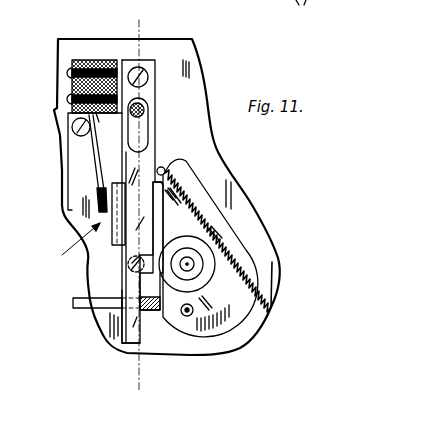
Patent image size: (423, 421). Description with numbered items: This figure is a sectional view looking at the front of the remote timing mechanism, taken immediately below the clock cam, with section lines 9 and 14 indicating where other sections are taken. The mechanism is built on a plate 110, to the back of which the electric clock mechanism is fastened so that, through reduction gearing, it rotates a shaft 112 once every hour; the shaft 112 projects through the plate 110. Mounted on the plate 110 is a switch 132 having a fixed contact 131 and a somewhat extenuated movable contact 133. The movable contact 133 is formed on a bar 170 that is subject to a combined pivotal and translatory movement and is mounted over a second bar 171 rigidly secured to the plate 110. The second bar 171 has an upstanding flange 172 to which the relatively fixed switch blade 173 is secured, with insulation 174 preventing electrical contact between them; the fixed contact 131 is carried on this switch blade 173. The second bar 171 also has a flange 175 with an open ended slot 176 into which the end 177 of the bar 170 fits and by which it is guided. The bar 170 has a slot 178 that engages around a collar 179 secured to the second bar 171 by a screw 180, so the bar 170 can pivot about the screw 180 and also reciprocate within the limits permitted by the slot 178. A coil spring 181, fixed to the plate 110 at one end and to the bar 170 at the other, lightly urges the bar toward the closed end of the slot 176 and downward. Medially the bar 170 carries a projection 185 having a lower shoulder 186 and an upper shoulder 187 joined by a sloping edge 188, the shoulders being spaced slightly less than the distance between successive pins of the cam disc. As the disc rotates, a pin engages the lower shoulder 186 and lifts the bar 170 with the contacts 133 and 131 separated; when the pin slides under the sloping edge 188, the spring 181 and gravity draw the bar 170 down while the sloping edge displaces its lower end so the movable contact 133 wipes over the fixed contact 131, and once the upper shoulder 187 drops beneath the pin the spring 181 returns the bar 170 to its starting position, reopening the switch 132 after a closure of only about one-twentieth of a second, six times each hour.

The section line 9 is at (95, 11).
The section line 14 is at (118, 25).
The plate 110 is at (267, 293).
The shaft 112 is at (203, 268).
The fixed contact 131 is at (99, 195).
The switch 132 is at (114, 247).
The movable contact 133 is at (94, 303).
The bar 170 is at (155, 152).
The second bar 171 is at (150, 66).
The upstanding flange 172 is at (116, 58).
The switch blade 173 is at (100, 152).
The insulation 174 is at (100, 60).
The flange 175 is at (148, 305).
The open ended slot 176 is at (120, 308).
The end 177 is at (123, 345).
The slot 178 is at (148, 127).
The collar 179 is at (142, 101).
The screw 180 is at (72, 128).
The coil spring 181 is at (280, 248).
The projection 185 is at (182, 302).
The lower shoulder 186 is at (140, 283).
The upper shoulder 187 is at (160, 238).
The sloping edge 188 is at (195, 264).